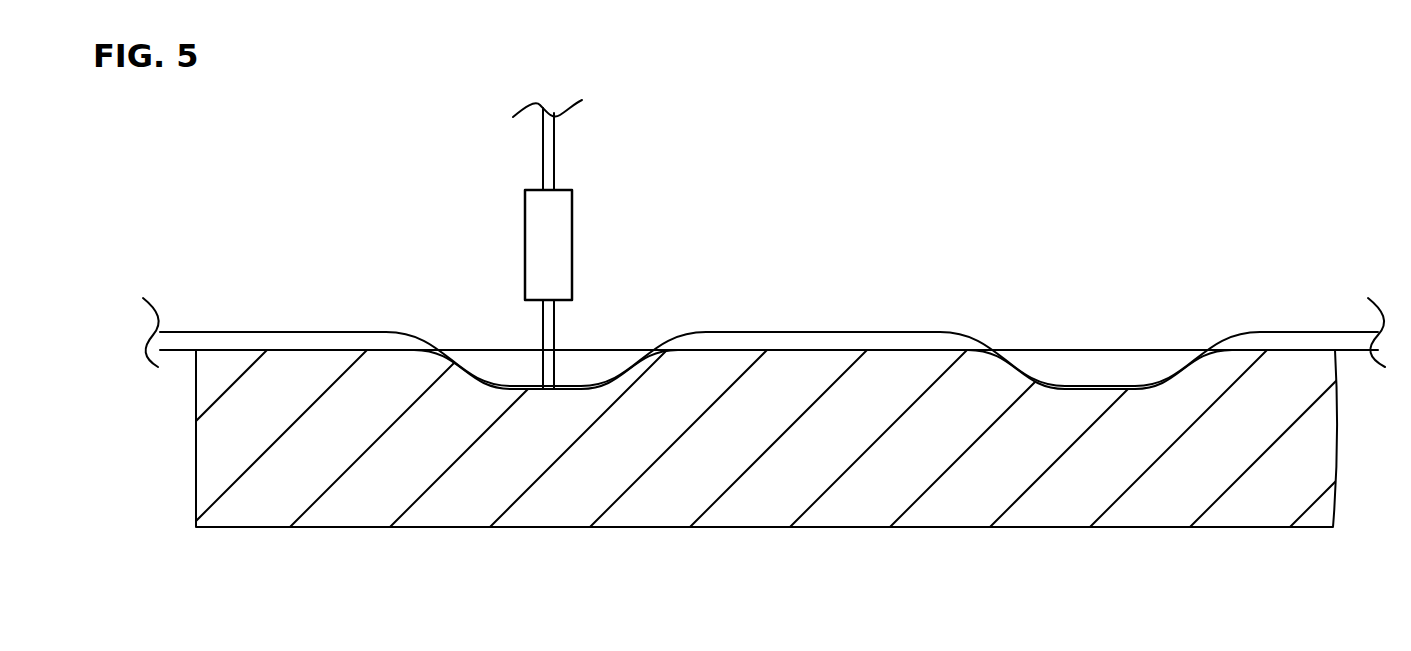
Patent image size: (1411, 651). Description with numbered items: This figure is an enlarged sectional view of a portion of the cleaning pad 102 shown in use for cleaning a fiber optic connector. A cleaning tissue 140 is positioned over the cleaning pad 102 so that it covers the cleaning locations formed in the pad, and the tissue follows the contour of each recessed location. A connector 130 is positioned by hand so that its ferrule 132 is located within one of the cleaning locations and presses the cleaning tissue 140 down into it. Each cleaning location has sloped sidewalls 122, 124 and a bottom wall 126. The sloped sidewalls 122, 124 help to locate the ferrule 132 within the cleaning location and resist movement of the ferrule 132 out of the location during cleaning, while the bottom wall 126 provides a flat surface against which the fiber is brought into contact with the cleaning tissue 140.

The cleaning pad 102 is at (1042, 512).
The cleaning tissue 140 is at (190, 332).
The connector 130 is at (606, 156).
The ferrule 132 is at (556, 358).
The sloped sidewall 122 is at (468, 377).
The sloped sidewall 124 is at (630, 377).
The bottom wall 126 is at (543, 390).